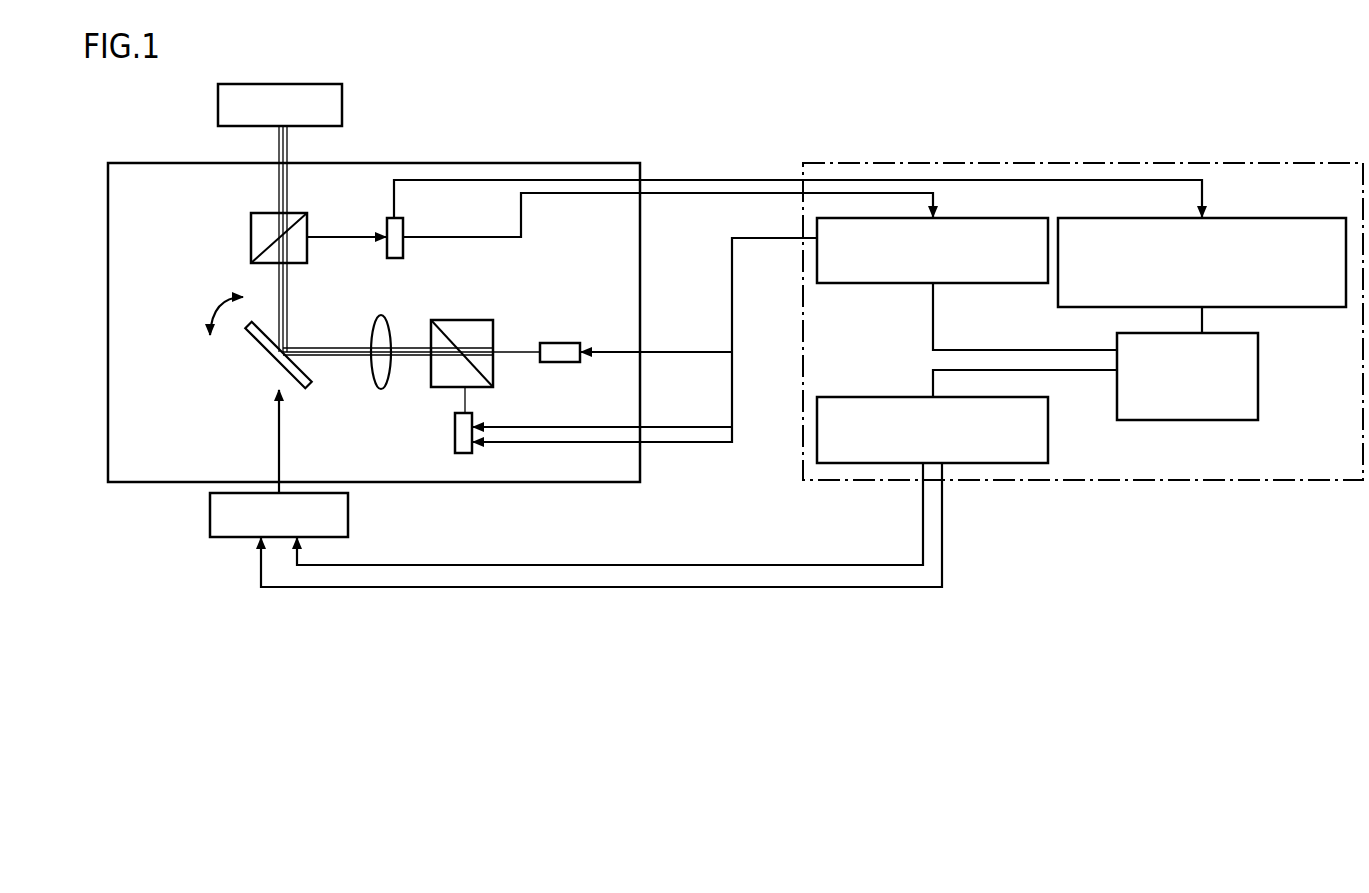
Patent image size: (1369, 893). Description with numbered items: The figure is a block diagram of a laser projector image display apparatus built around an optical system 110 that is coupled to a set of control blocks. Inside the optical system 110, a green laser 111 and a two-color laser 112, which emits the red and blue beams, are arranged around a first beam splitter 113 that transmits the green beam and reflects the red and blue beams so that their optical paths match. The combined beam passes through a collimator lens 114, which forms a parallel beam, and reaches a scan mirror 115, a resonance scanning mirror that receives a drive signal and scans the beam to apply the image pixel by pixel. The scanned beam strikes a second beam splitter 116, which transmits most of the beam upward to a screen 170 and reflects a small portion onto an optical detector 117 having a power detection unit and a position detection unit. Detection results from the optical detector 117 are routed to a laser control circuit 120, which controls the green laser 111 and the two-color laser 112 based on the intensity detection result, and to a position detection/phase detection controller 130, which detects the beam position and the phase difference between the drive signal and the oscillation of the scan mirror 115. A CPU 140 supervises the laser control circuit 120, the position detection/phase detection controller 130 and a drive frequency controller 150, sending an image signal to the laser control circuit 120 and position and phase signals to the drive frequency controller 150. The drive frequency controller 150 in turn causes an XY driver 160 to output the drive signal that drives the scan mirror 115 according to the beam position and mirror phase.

The optical system 110 is at (108, 232).
The green laser 111 is at (557, 343).
The two-color laser 112 is at (455, 435).
The first beam splitter 113 is at (461, 320).
The collimator lens 114 is at (372, 333).
The scan mirror 115 is at (277, 363).
The second beam splitter 116 is at (251, 232).
The optical detector 117 is at (387, 227).
The laser control circuit 120 is at (965, 217).
The position detection/phase detection controller 130 is at (1235, 217).
The CPU 140 is at (1197, 422).
The drive frequency controller 150 is at (1050, 452).
The XY driver 160 is at (210, 515).
The screen 170 is at (218, 103).